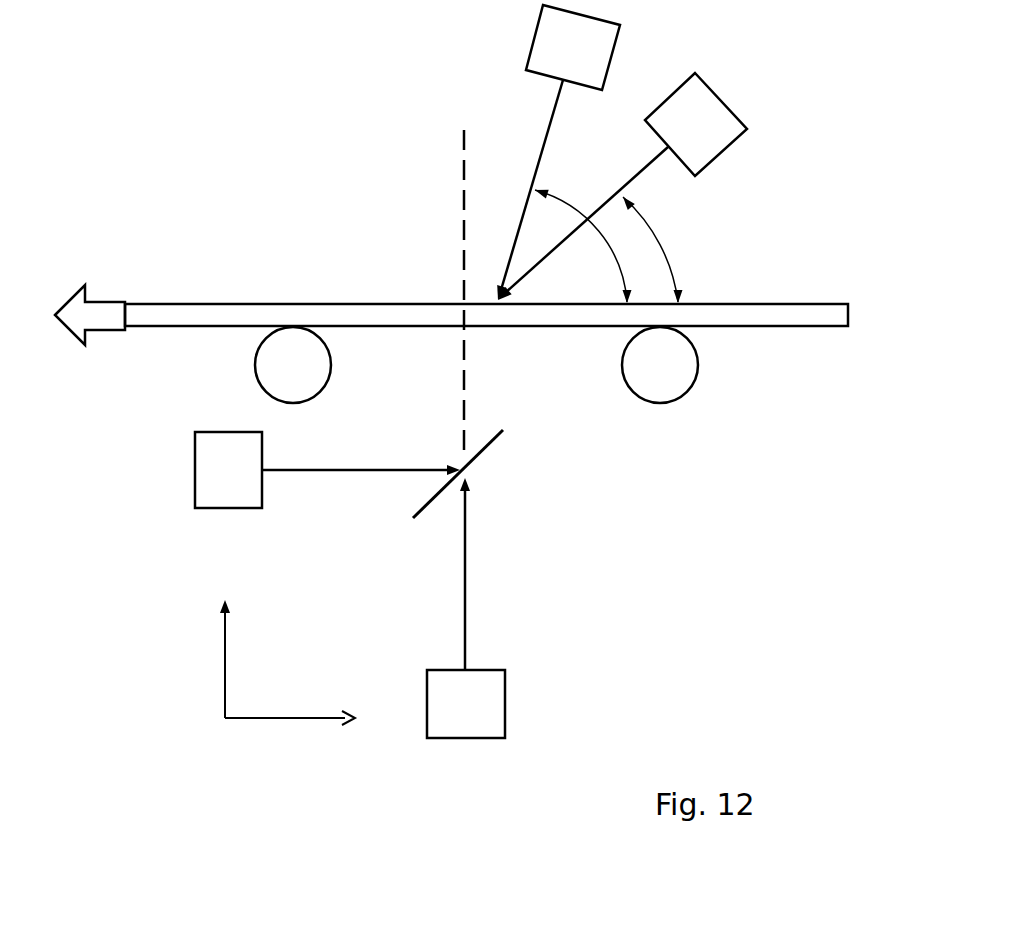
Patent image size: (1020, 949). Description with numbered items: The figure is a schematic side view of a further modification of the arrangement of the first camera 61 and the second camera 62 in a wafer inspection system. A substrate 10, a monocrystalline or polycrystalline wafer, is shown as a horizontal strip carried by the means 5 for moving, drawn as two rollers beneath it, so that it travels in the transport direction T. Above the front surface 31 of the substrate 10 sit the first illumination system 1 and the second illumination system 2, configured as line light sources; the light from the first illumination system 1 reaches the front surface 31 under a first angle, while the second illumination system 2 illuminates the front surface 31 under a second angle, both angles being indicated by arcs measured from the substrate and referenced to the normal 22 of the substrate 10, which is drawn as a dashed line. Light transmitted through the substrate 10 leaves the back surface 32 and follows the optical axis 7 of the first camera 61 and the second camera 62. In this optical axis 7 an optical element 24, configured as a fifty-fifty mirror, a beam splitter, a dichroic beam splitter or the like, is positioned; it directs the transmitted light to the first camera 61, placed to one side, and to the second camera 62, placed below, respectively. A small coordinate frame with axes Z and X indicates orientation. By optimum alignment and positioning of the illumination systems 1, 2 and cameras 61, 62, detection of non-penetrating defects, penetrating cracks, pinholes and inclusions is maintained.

The first illumination system 1 is at (688, 138).
The second illumination system 2 is at (562, 62).
The front surface 31 is at (212, 296).
The back surface 32 is at (580, 336).
The means for moving 5 is at (268, 372).
The first camera 61 is at (227, 495).
The second camera 62 is at (493, 715).
The optical axis 7 is at (373, 468).
The substrate 10 is at (805, 313).
The normal 22 is at (463, 190).
The optical element 24 is at (480, 460).
The transport direction T is at (103, 318).
The Z axis Z is at (212, 659).
The X axis X is at (290, 734).